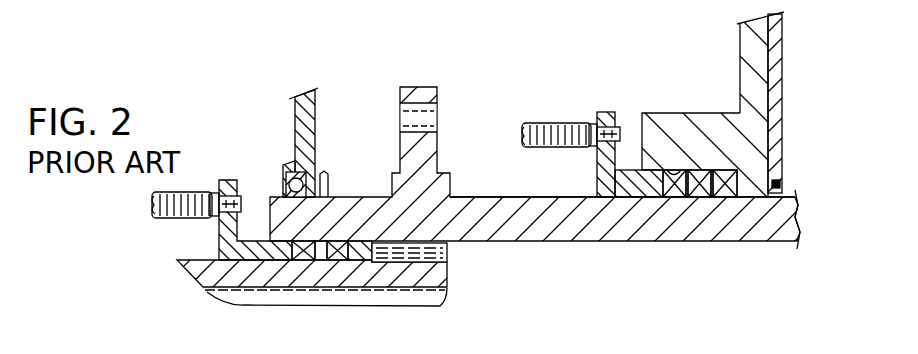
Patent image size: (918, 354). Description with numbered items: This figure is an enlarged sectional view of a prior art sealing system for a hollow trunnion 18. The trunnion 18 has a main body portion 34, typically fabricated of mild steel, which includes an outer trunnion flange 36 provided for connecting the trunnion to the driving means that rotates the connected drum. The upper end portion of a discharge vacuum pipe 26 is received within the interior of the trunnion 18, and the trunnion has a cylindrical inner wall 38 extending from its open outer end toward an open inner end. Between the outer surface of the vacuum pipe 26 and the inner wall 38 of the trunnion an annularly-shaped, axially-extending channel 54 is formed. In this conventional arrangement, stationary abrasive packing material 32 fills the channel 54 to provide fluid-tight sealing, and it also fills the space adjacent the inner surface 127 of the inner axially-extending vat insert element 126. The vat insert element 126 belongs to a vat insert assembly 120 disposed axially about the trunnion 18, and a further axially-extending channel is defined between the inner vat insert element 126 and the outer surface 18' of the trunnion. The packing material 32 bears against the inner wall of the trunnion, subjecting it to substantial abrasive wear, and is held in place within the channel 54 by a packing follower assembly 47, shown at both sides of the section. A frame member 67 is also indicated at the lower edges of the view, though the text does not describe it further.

The hollow trunnion 18 is at (535, 168).
The outer surface of trunnion 18' is at (645, 220).
The discharge vacuum pipe 26 is at (447, 273).
The abrasive packing material 32 is at (342, 262).
The main body portion 34 is at (520, 207).
The outer trunnion flange 36 is at (400, 136).
The cylindrical inner wall 38 is at (337, 197).
The packing follower assembly 47 is at (248, 173).
The channel 54 is at (316, 265).
The frame member 67 is at (110, 353).
The vat insert assembly 120 is at (733, 31).
The inner axially-extending vat insert element 126 is at (692, 116).
The inner surface of inner vat insert element 127 is at (663, 166).